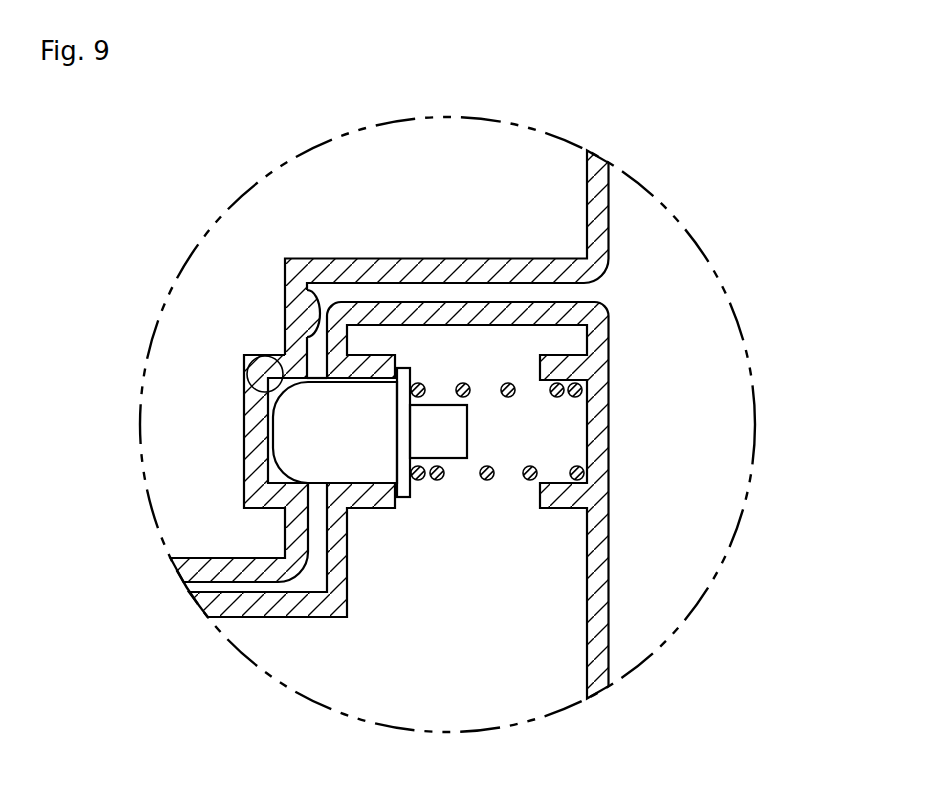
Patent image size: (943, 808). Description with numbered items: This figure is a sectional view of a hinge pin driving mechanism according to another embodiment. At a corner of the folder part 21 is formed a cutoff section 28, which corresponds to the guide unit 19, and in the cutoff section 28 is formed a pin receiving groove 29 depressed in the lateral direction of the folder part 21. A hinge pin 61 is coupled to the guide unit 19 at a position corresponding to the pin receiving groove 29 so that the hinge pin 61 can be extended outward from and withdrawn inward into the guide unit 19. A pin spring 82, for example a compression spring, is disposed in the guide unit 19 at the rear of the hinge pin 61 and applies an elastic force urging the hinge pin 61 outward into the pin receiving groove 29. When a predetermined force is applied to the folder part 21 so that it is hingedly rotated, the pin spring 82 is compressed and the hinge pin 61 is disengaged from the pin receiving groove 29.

The guide unit 19 is at (616, 363).
The folder part 21 is at (616, 237).
The cutoff section 28 is at (308, 290).
The pin receiving groove 29 is at (244, 360).
The hinge pin 61 is at (318, 432).
The pin spring 82 is at (585, 471).